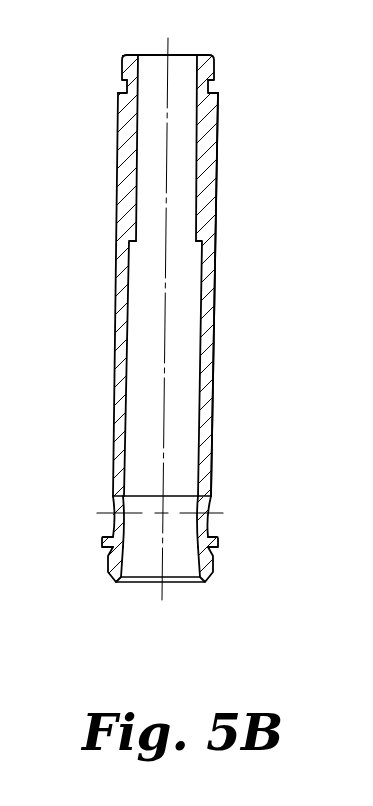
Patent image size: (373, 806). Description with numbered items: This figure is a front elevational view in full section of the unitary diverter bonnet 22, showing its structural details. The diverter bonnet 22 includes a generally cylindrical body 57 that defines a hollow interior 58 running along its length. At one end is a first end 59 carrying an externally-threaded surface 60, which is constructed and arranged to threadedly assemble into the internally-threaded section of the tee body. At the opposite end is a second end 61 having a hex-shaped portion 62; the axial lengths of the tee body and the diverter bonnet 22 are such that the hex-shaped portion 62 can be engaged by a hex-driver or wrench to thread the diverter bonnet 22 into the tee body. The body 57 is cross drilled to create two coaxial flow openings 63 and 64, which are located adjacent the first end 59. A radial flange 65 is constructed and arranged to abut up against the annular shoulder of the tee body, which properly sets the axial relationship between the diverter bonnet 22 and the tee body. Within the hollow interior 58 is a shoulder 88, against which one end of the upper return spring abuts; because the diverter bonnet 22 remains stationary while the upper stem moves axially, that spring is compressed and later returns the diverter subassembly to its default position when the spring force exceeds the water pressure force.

The diverter bonnet 22 is at (252, 174).
The generally cylindrical body 57 is at (216, 215).
The hollow interior 58 is at (138, 157).
The first end 59 is at (110, 548).
The externally-threaded surface 60 is at (109, 570).
The second end 61 is at (212, 88).
The hex-shaped portion 62 is at (120, 67).
The flow opening 63 is at (200, 513).
The flow opening 64 is at (118, 520).
The radial flange 65 is at (219, 542).
The shoulder 88 is at (130, 246).